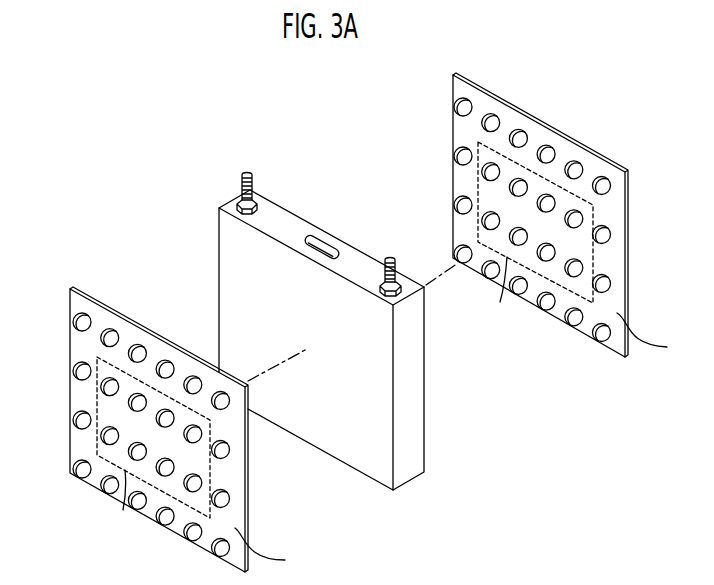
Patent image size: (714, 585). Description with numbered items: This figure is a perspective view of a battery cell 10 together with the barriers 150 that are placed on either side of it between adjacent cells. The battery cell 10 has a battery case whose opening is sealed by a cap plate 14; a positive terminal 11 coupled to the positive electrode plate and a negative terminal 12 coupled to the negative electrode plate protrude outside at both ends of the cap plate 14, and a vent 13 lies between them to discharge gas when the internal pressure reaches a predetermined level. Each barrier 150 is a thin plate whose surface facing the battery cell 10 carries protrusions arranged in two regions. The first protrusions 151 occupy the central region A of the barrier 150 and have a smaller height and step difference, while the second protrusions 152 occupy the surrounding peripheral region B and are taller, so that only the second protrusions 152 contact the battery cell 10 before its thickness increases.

The battery cell 10 is at (313, 310).
The positive terminal 11 is at (248, 173).
The negative terminal 12 is at (388, 257).
The vent 13 is at (313, 242).
The cap plate 14 is at (273, 213).
The barrier 150 is at (68, 277).
The first protrusion 151 is at (108, 390).
The second protrusion 152 is at (74, 323).